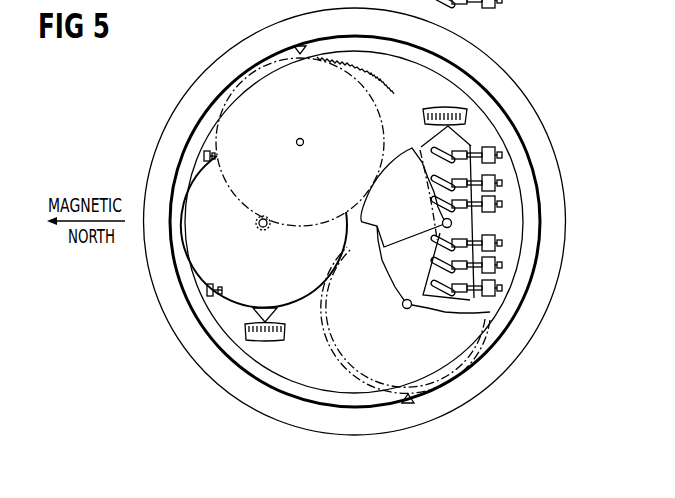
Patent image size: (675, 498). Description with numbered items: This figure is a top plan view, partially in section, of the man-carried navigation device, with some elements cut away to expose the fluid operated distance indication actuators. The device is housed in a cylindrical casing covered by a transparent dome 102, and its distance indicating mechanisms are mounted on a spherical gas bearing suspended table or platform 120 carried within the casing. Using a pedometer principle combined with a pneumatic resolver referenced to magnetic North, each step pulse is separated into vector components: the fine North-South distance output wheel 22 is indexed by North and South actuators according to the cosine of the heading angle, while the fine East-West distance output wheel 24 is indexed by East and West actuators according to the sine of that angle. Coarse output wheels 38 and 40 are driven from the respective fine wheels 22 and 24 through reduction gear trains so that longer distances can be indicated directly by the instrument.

The North-South distance output wheel 22 is at (238, 286).
The East-West distance output wheel 24 is at (397, 168).
The coarse output wheel 38 is at (363, 118).
The coarse output wheel 40 is at (355, 338).
The transparent dome 102 is at (480, 388).
The table or platform 120 is at (508, 252).